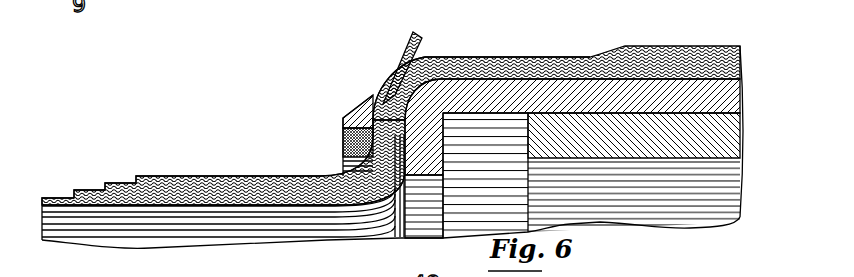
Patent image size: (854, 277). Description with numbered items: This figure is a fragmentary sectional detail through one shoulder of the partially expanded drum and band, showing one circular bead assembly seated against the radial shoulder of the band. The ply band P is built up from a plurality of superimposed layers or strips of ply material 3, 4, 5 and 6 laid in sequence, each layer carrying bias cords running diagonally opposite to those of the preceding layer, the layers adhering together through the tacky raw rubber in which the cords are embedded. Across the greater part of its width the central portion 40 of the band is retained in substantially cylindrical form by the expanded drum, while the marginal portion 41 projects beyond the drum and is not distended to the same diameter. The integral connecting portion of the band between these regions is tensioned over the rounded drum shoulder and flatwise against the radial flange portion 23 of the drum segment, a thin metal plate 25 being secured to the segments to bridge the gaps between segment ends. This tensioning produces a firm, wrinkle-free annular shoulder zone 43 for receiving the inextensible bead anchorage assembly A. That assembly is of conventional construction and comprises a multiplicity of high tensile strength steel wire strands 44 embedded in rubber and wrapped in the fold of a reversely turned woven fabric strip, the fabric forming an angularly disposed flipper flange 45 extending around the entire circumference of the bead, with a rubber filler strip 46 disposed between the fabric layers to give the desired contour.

The ply material layer 3 is at (50, 199).
The ply material layer 4 is at (90, 191).
The ply material layer 5 is at (123, 184).
The ply material layer 6 is at (165, 177).
The marginal portion of the ply band 41 is at (212, 160).
The central portion of the ply band 40 is at (513, 56).
The shoulder zone 43 is at (410, 68).
The flipper flange 45 is at (408, 52).
The filler strip 46 is at (366, 110).
The strands 44 is at (343, 136).
The bead anchorage assembly A is at (335, 117).
The ply band P is at (570, 56).
The thin metal plate 25 is at (743, 72).
The flange portion 23 is at (447, 150).